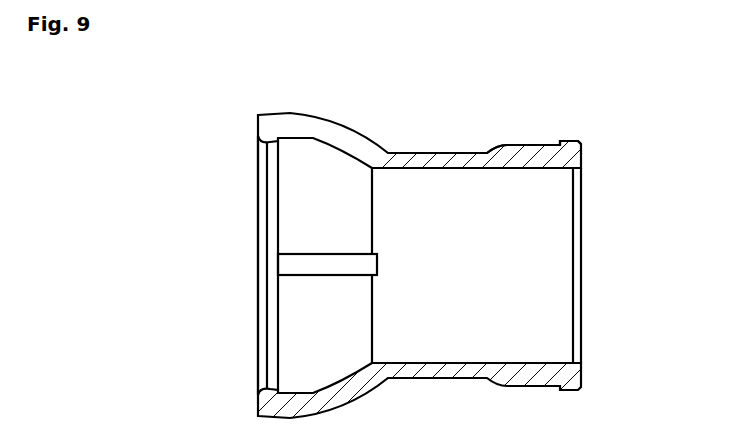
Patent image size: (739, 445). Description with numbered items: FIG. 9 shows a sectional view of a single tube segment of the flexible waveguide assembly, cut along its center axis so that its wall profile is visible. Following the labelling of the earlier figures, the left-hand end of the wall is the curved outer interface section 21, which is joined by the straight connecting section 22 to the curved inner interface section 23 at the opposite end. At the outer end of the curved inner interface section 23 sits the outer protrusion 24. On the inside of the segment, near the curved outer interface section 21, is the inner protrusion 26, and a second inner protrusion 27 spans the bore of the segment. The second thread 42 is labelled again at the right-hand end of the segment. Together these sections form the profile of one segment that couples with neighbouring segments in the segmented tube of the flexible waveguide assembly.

The curved outer interface section 21 is at (323, 117).
The connecting section 22 is at (428, 153).
The curved inner interface section 23 is at (532, 145).
The outer protrusion 24 is at (573, 145).
The inner protrusion 26 is at (268, 151).
The second inner protrusion 27 is at (312, 263).
The second thread 42 is at (573, 232).